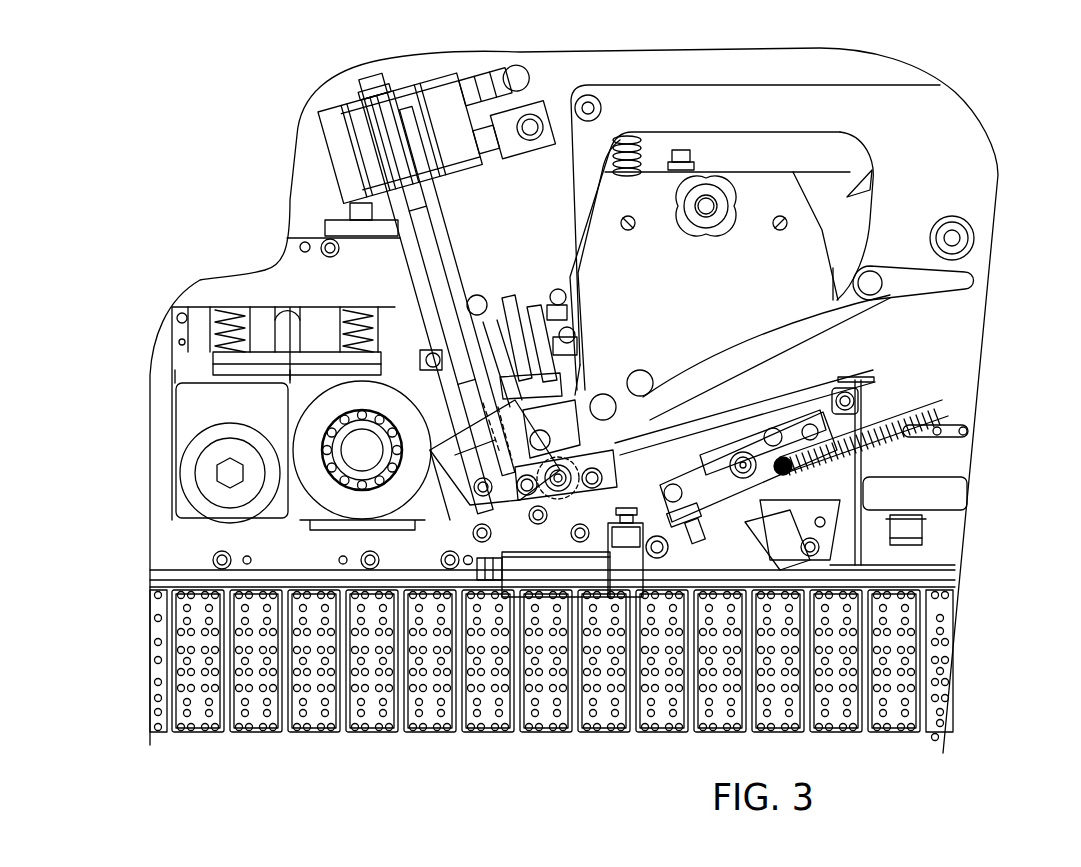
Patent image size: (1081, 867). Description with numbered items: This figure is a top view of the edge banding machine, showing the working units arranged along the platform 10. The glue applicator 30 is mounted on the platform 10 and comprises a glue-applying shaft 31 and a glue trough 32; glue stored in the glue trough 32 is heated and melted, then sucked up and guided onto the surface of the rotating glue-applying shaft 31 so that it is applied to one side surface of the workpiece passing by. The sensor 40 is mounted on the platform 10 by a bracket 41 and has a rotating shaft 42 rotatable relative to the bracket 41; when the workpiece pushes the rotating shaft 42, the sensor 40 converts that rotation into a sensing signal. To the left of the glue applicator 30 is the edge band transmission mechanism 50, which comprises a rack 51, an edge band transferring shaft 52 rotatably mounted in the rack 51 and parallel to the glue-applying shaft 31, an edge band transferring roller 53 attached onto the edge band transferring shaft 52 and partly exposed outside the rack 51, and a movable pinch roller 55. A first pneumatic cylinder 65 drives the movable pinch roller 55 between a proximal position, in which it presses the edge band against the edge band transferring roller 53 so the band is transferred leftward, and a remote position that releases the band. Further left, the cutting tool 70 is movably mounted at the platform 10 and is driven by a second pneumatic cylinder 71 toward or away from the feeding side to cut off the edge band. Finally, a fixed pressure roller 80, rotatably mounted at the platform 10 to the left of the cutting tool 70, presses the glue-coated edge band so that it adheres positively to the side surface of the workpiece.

The platform 10 is at (250, 293).
The glue applicator 30 is at (805, 406).
The glue-applying shaft 31 is at (748, 523).
The glue trough 32 is at (849, 196).
The sensor 40 is at (574, 600).
The bracket 41 is at (603, 582).
The rotating shaft 42 is at (627, 537).
The edge band transmission mechanism 50 is at (782, 253).
The rack 51 is at (527, 502).
The edge band transferring shaft 52 is at (575, 482).
The edge band transferring roller 53 is at (560, 490).
The movable pinch roller 55 is at (492, 262).
The first pneumatic cylinder 65 is at (524, 335).
The cutting tool 70 is at (450, 393).
The second pneumatic cylinder 71 is at (340, 122).
The fixed pressure roller 80 is at (323, 490).